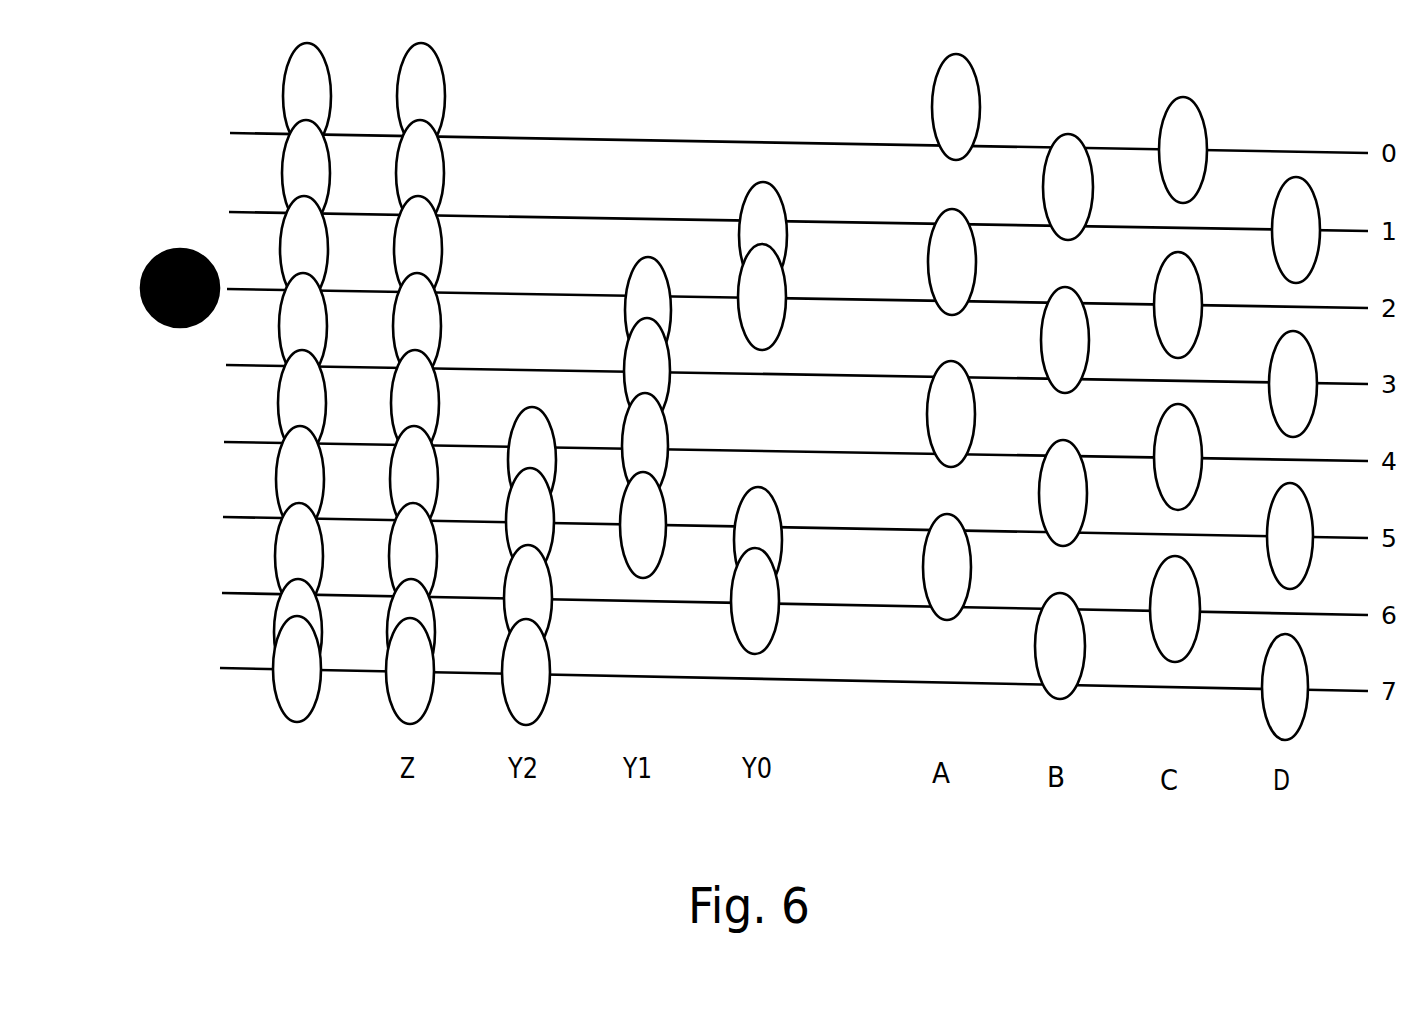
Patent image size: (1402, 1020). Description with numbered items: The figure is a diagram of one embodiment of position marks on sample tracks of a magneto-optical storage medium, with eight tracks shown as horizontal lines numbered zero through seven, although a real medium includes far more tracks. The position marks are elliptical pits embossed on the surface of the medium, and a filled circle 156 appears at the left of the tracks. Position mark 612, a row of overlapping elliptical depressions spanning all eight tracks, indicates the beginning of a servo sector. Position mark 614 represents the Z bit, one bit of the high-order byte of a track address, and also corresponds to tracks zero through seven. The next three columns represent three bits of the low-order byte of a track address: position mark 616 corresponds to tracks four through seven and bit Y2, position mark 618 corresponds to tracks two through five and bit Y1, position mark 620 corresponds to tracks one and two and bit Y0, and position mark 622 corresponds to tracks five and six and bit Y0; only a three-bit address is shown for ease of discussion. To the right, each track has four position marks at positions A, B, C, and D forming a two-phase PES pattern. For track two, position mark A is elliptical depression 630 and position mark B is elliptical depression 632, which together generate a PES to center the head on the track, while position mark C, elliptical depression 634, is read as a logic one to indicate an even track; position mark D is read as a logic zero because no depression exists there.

The input signal source 156 is at (142, 297).
The position mark 612 is at (277, 550).
The position mark 614 is at (443, 250).
The position mark 616 is at (533, 408).
The position mark 618 is at (628, 350).
The position mark 620 is at (738, 232).
The position mark 622 is at (727, 618).
The elliptical depression 630 is at (930, 290).
The elliptical depression 632 is at (1045, 367).
The elliptical depression 634 is at (1158, 287).